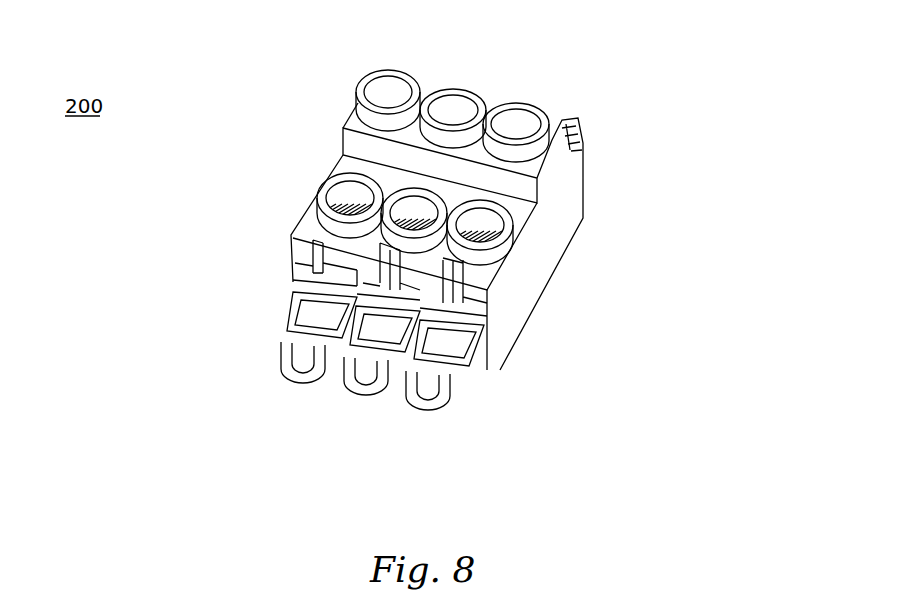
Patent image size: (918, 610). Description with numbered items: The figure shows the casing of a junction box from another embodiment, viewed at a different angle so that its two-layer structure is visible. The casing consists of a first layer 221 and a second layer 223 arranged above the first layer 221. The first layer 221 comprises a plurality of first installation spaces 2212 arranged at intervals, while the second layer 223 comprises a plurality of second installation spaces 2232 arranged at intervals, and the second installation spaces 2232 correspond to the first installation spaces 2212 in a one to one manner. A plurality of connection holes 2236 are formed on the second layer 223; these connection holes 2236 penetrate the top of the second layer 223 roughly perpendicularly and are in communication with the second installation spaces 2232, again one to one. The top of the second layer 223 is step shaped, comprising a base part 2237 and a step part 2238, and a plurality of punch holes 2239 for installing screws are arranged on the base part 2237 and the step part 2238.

The first layer 221 is at (512, 347).
The second layer 223 is at (513, 275).
The first installation spaces 2212 is at (453, 355).
The second installation spaces 2232 is at (333, 268).
The connection holes 2236 is at (320, 243).
The base part 2237 is at (523, 212).
The step part 2238 is at (558, 167).
The punch holes 2239 is at (522, 115).